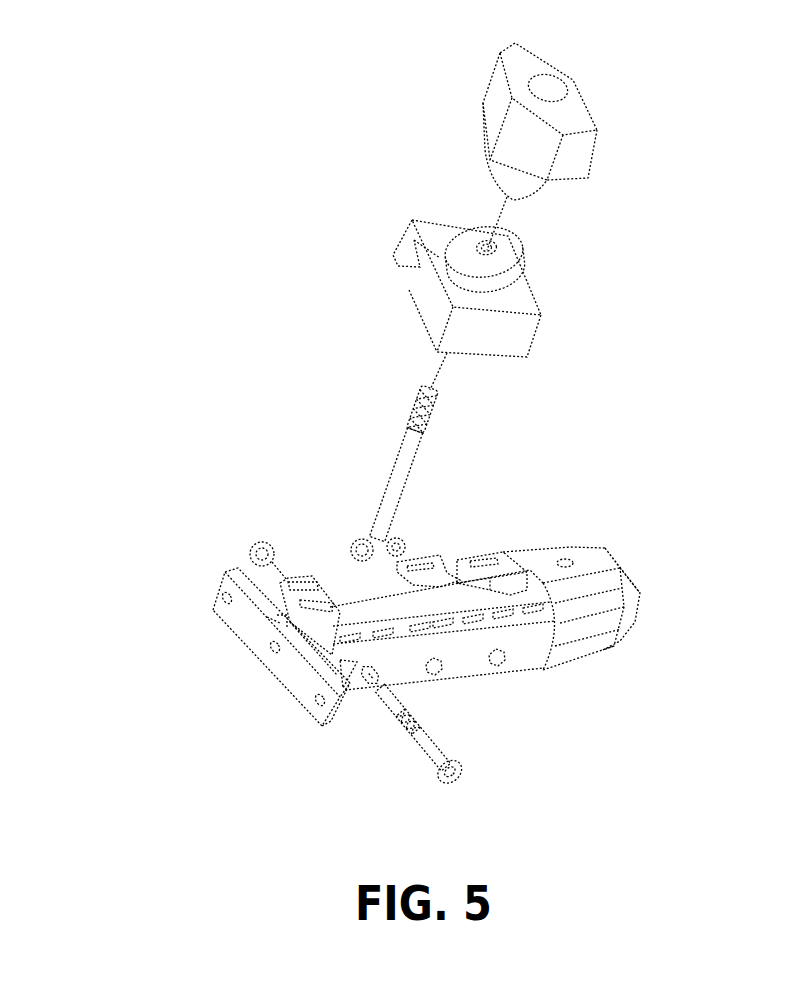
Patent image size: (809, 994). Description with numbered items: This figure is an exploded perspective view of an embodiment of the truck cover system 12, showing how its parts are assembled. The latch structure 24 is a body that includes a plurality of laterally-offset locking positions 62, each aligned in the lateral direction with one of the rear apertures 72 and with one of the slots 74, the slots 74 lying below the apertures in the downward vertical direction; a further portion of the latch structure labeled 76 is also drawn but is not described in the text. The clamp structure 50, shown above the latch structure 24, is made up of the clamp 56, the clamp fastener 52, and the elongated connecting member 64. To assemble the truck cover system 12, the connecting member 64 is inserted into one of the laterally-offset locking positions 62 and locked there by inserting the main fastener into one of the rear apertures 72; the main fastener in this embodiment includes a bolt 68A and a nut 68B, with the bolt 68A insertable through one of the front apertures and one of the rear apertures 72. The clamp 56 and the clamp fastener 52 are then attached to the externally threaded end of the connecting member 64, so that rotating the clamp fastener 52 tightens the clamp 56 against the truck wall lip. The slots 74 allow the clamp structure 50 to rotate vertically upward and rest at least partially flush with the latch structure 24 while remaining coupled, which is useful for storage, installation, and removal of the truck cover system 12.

The truck cover system 12 is at (121, 692).
The latch structure 24 is at (641, 607).
The clamp structure 50 is at (458, 27).
The clamp fastener 52 is at (573, 118).
The clamp 56 is at (495, 332).
The laterally-offset locking positions 62 is at (318, 573).
The connecting member 64 is at (400, 477).
The bolt 68A is at (440, 748).
The nut 68B is at (270, 542).
The rear apertures 72 is at (372, 683).
The slots 74 is at (334, 585).
The octagonal bar end 76 is at (597, 637).